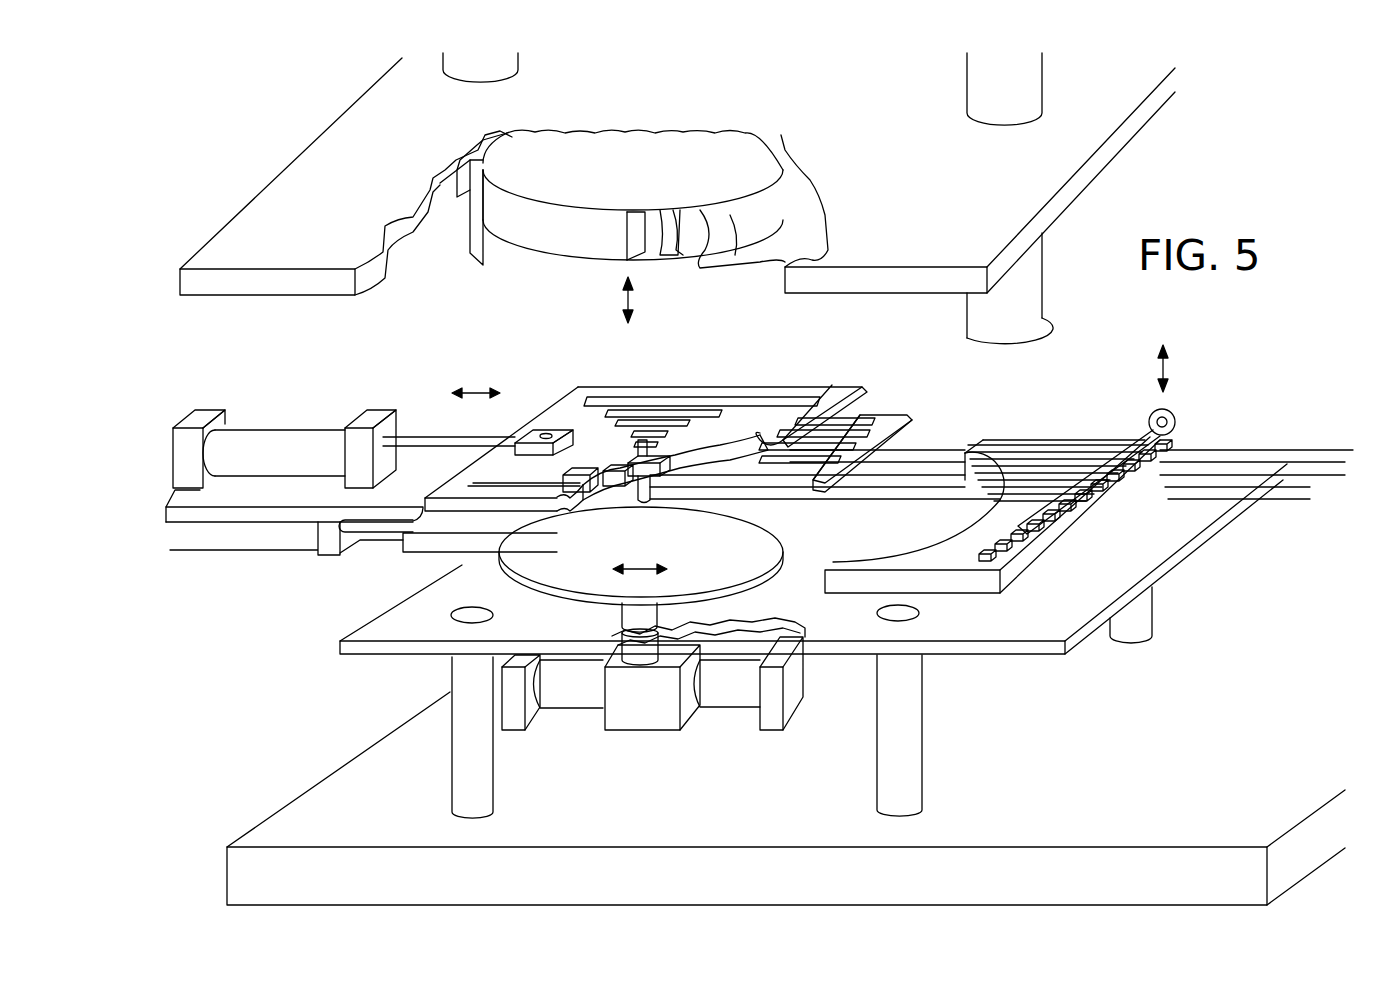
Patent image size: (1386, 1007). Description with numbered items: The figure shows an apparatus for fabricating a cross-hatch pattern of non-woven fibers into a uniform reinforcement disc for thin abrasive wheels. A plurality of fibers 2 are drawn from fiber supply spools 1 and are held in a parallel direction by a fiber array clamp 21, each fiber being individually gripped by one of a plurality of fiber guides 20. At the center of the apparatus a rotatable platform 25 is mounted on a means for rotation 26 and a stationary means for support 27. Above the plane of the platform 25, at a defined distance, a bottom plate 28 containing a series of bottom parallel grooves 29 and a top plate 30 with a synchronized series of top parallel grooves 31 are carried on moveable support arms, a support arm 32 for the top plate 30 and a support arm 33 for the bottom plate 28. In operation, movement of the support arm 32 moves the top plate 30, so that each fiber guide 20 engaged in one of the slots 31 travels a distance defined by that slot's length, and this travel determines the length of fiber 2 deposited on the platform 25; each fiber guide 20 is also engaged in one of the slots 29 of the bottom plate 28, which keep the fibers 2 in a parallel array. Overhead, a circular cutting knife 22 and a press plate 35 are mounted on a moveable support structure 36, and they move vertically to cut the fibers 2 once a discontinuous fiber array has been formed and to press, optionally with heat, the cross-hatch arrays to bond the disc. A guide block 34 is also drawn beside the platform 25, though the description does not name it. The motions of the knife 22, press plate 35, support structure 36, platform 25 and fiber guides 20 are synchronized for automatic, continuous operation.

The fiber supply spools 1 is at (1287, 500).
The fibers 2 is at (848, 500).
The fiber guides 20 is at (655, 502).
The fiber array clamp 21 is at (1125, 437).
The circular cutting knife 22 is at (787, 262).
The rotatable platform 25 is at (540, 578).
The means for rotation 26 is at (743, 707).
The stationary means for support 27 is at (922, 742).
The bottom plate 28 is at (897, 412).
The bottom parallel grooves 29 is at (855, 415).
The top plate 30 is at (690, 398).
The top parallel grooves 31 is at (806, 390).
The moveable support arm for the top plate 32 is at (378, 414).
The moveable support arm for the bottom plate 33 is at (258, 552).
The guide block 34 is at (957, 515).
The press plate 35 is at (708, 252).
The moveable support structure 36 is at (1128, 133).